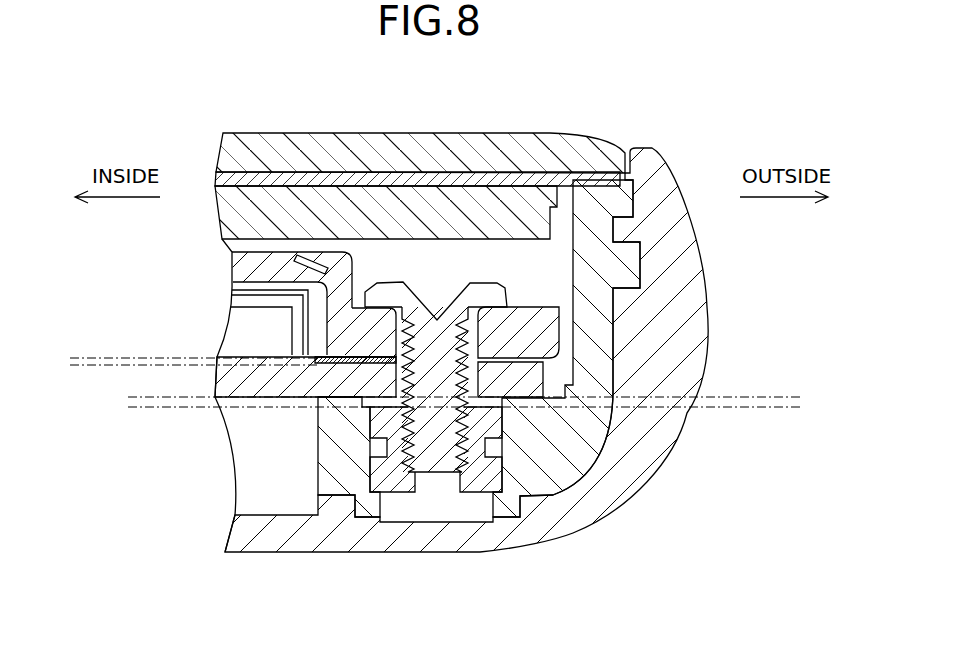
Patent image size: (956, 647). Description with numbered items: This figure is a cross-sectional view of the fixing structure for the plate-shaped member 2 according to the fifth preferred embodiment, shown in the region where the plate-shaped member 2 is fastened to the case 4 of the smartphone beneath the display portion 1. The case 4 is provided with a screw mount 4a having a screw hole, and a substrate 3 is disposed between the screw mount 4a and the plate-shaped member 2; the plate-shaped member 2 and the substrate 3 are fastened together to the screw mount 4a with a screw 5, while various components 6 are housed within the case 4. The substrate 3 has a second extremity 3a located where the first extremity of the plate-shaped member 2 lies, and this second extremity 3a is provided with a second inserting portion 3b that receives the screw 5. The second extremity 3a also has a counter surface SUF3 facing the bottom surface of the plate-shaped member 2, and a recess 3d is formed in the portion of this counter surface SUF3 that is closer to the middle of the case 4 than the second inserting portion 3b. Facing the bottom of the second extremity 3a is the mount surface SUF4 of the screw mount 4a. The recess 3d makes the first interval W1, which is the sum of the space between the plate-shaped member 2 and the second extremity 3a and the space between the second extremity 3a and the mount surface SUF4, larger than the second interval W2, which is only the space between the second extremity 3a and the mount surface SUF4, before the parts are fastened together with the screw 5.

The display portion 1 is at (504, 200).
The plate-shaped member 2 is at (310, 252).
The substrate 3 is at (238, 374).
The second extremity 3a is at (535, 369).
The second inserting portion 3b is at (470, 322).
The recess 3d is at (318, 358).
The case 4 is at (612, 507).
The screw mount 4a is at (502, 427).
The screw 5 is at (388, 283).
The various components 6 is at (250, 322).
The counter surface SUF3 is at (373, 357).
The mount surface SUF4 is at (397, 400).
The first interval W1 is at (148, 417).
The second interval W2 is at (782, 353).